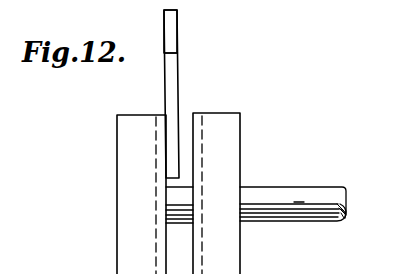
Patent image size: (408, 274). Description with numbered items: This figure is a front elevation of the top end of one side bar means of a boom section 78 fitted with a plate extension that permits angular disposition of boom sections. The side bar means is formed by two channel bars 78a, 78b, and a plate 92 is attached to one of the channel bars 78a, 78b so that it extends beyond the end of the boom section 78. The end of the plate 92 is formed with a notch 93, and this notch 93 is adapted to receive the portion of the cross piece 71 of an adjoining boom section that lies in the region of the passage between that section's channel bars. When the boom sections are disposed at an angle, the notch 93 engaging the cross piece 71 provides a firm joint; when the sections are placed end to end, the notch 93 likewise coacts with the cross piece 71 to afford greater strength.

The cross piece 71 is at (311, 183).
The boom section 78 is at (226, 108).
The channel bar 78a is at (117, 187).
The channel bar 78b is at (241, 142).
The plate 92 is at (170, 90).
The notch 93 is at (172, 42).